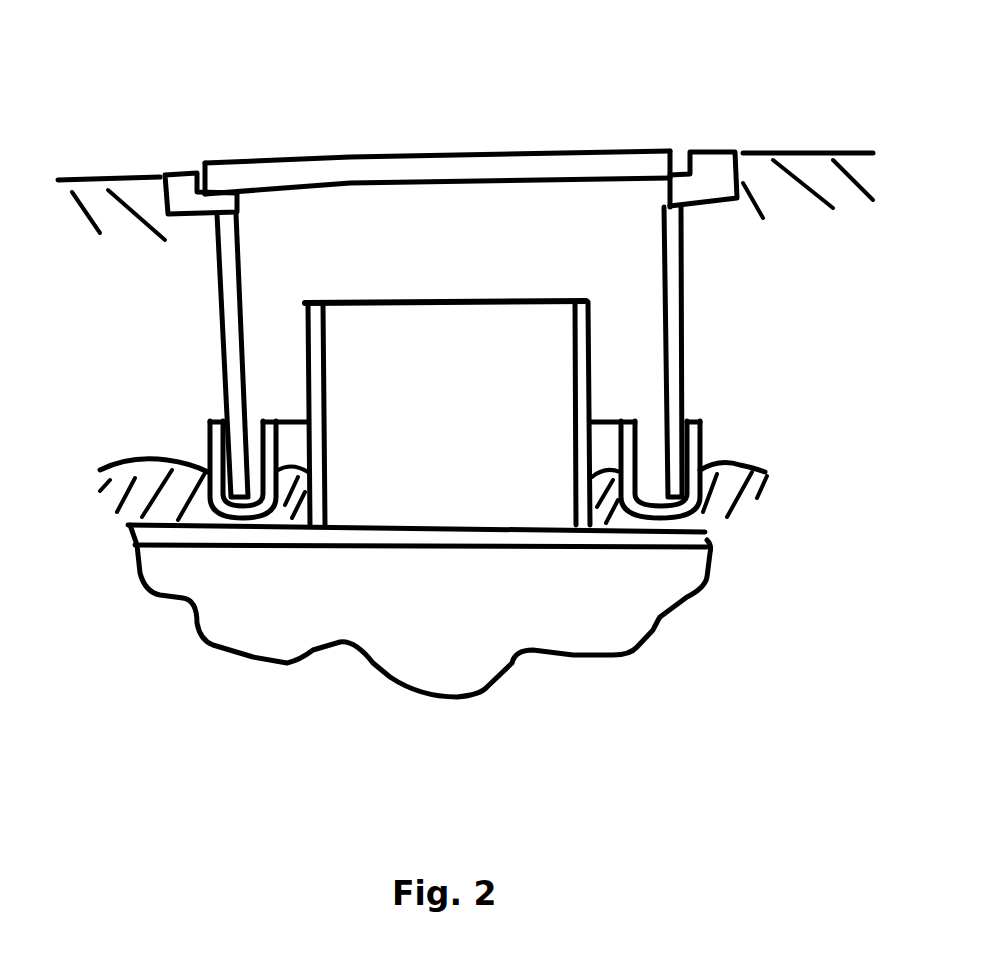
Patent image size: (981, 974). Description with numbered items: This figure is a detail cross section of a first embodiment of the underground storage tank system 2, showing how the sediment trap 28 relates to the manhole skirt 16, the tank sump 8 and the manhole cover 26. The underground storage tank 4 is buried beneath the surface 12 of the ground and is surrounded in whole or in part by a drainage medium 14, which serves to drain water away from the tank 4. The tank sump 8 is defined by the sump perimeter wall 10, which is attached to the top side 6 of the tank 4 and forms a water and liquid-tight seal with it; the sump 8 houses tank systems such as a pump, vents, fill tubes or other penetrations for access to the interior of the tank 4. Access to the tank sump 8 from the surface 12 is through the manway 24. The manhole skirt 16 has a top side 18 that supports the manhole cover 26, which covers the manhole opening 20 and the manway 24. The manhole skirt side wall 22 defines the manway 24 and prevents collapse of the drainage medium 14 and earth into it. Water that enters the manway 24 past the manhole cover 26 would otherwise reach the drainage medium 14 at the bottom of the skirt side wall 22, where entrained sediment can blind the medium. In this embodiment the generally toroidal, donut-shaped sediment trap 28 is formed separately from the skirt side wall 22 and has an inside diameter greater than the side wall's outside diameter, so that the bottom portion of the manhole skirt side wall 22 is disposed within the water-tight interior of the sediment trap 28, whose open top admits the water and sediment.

The underground storage tank system 2 is at (108, 760).
The underground storage tank 4 is at (457, 618).
The top side of tank 6 is at (203, 545).
The tank sump 8 is at (437, 407).
The sump perimeter wall 10 is at (300, 352).
The surface of the ground 12 is at (82, 175).
The drainage medium 14 is at (133, 473).
The manhole skirt 16 is at (712, 173).
The top side of manhole skirt 18 is at (180, 173).
The manhole opening 20 is at (437, 113).
The manhole skirt side wall 22 is at (213, 370).
The manway 24 is at (446, 252).
The manhole cover 26 is at (420, 150).
The sediment trap 28 is at (643, 447).